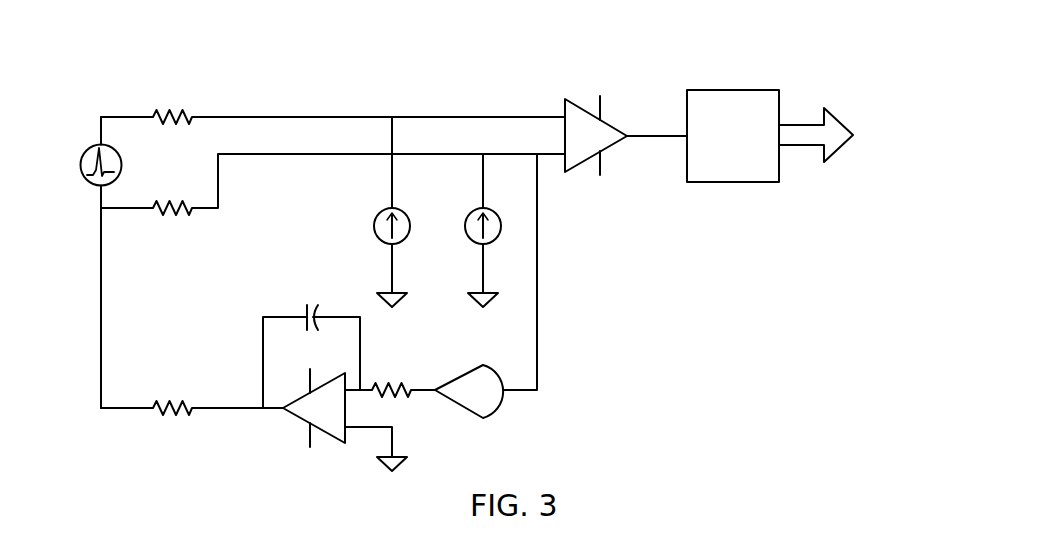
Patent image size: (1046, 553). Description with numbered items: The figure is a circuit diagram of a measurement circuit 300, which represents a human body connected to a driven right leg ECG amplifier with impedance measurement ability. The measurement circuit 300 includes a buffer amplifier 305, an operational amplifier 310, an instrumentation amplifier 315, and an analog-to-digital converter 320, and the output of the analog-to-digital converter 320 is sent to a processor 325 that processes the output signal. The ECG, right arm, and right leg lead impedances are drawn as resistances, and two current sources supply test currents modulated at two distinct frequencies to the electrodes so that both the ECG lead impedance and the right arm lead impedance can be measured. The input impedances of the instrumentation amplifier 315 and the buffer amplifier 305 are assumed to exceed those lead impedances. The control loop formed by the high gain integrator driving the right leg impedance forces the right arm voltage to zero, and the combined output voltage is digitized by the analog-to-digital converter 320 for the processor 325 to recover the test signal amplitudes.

The measurement circuit 300 is at (230, 23).
The buffer amplifier 305 is at (489, 398).
The operational amplifier 310 is at (298, 411).
The instrumentation amplifier 315 is at (611, 137).
The analog-to-digital converter 320 is at (698, 97).
The processor 325 is at (851, 60).